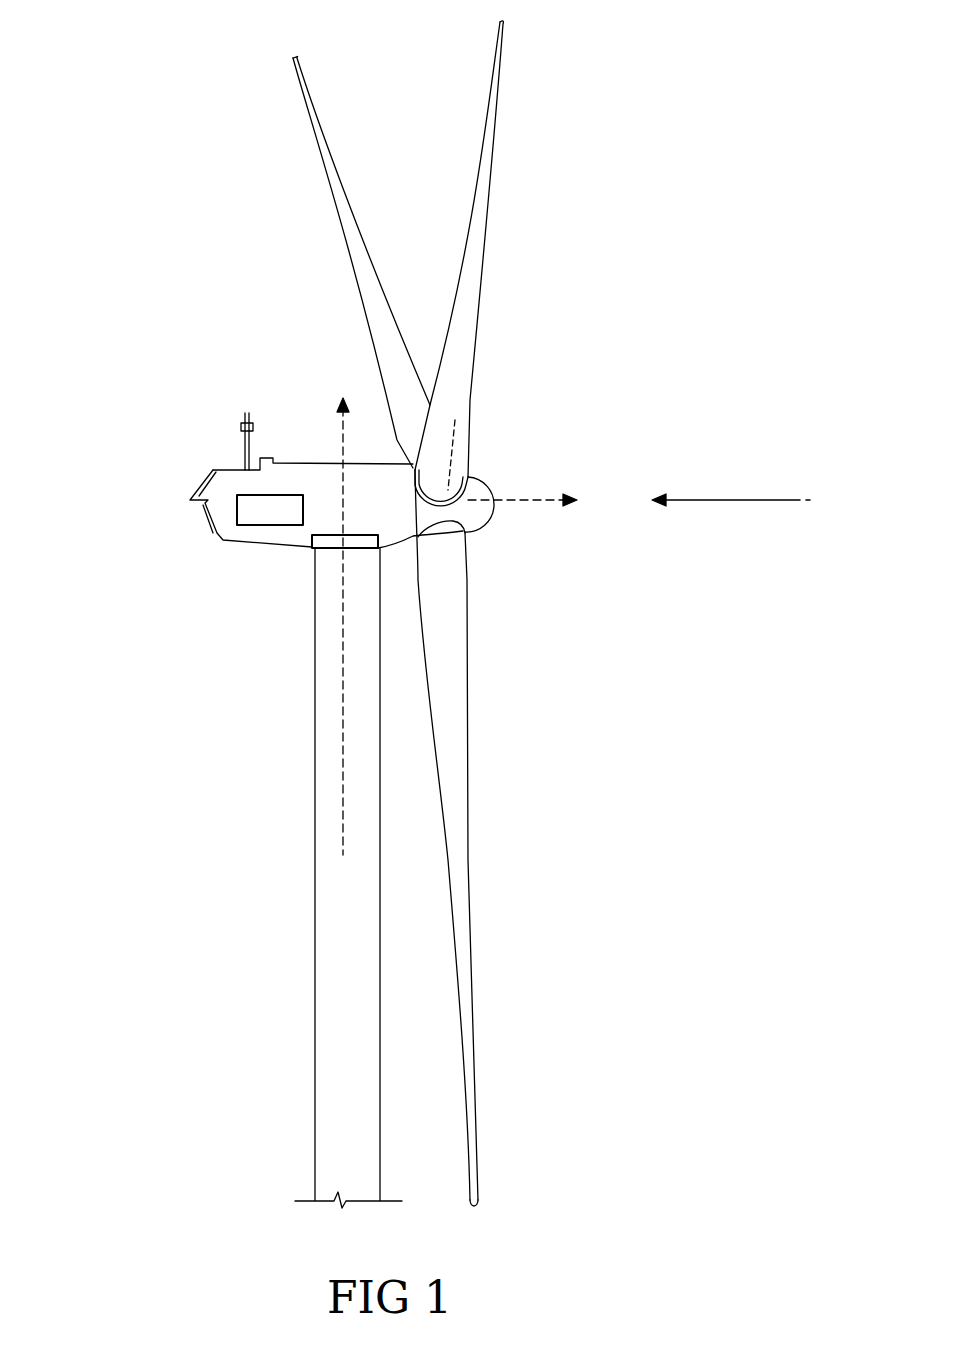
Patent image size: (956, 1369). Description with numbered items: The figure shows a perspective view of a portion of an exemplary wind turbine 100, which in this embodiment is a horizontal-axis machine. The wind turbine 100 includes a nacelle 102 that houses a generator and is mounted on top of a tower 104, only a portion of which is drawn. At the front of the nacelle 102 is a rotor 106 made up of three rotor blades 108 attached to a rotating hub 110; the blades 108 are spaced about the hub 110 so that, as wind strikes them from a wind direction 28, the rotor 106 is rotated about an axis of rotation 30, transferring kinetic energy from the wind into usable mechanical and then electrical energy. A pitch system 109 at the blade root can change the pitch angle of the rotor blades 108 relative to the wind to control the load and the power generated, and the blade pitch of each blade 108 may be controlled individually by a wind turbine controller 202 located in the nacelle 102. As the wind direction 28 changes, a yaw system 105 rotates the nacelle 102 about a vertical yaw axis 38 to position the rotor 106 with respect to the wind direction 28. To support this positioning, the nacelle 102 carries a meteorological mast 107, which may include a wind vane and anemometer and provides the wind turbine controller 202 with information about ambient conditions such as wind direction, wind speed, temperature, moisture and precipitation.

The wind turbine 100 is at (180, 107).
The nacelle 102 is at (247, 542).
The tower 104 is at (315, 823).
The yaw system 105 is at (333, 535).
The rotor 106 is at (496, 613).
The meteorological mast 107 is at (247, 402).
The rotor blade 108 is at (330, 145).
The pitch system 109 is at (443, 528).
The hub 110 is at (488, 518).
The wind turbine controller 202 is at (250, 510).
The wind direction 28 is at (767, 500).
The axis of rotation 30 is at (525, 492).
The yaw axis 38 is at (343, 712).